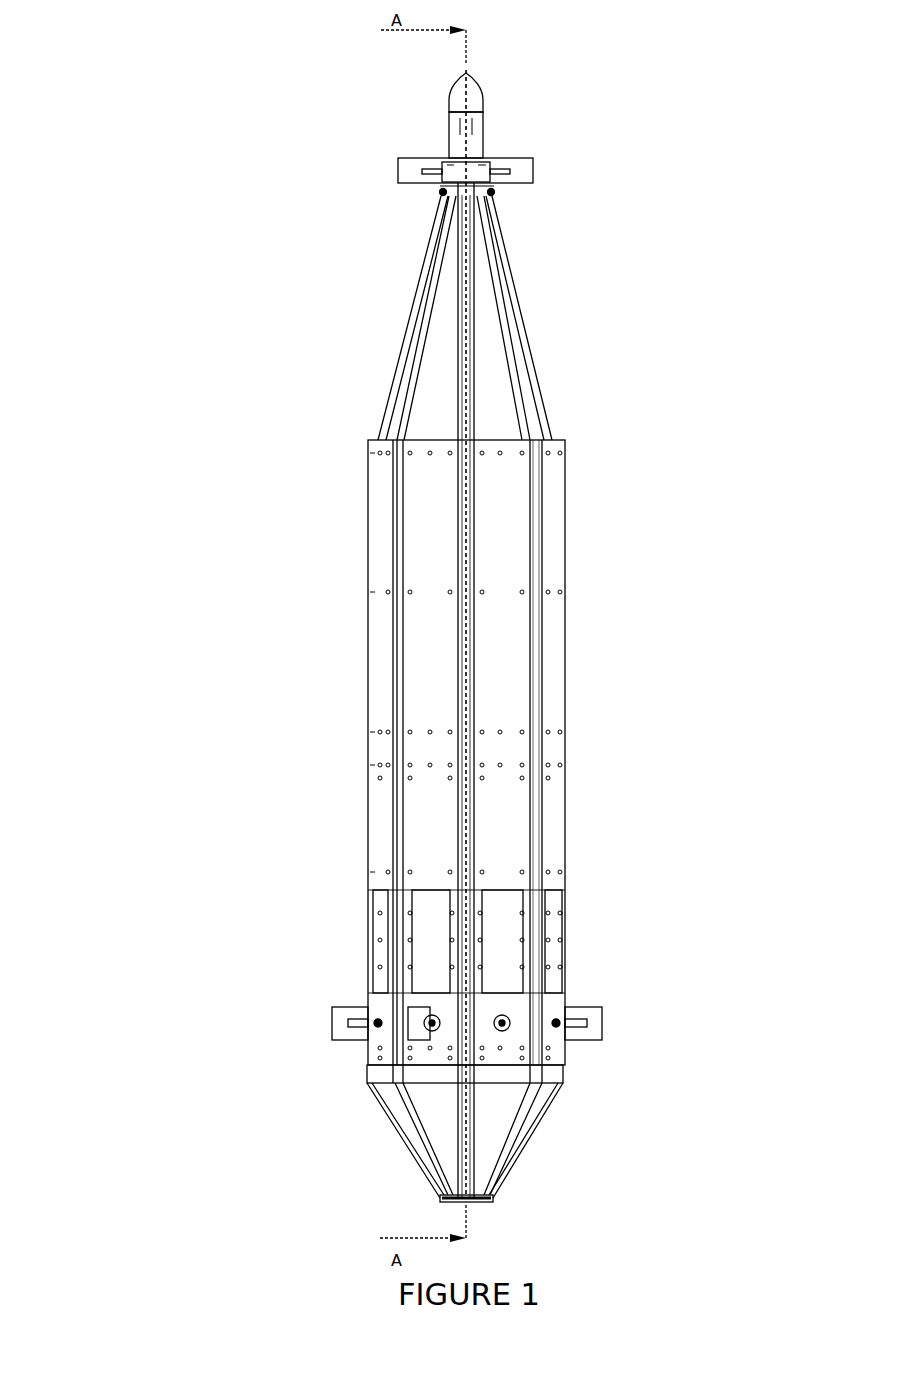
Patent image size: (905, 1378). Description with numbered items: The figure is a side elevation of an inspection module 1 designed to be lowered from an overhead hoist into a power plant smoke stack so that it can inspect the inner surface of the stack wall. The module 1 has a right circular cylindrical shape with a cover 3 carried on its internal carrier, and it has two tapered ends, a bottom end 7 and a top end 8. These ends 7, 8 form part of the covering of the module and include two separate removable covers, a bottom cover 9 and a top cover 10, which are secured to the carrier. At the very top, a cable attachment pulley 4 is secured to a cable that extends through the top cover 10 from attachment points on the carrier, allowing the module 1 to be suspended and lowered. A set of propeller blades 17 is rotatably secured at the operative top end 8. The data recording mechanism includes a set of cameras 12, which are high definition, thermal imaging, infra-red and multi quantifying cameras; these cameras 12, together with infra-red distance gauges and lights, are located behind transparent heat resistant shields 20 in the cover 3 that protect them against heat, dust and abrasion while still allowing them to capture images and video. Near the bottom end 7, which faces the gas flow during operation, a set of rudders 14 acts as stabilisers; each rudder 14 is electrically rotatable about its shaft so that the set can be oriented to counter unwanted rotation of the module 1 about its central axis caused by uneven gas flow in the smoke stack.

The inspection module 1 is at (140, 332).
The cover 3 is at (508, 678).
The cable attachment pulley 4 is at (472, 94).
The bottom end 7 is at (550, 1168).
The top end 8 is at (522, 242).
The bottom cover 9 is at (534, 1110).
The top cover 10 is at (490, 358).
The cameras 12 is at (503, 1022).
The rudders 14 is at (343, 1022).
The propeller blades 17 is at (412, 168).
The transparent heat resistant shields 20 is at (503, 905).